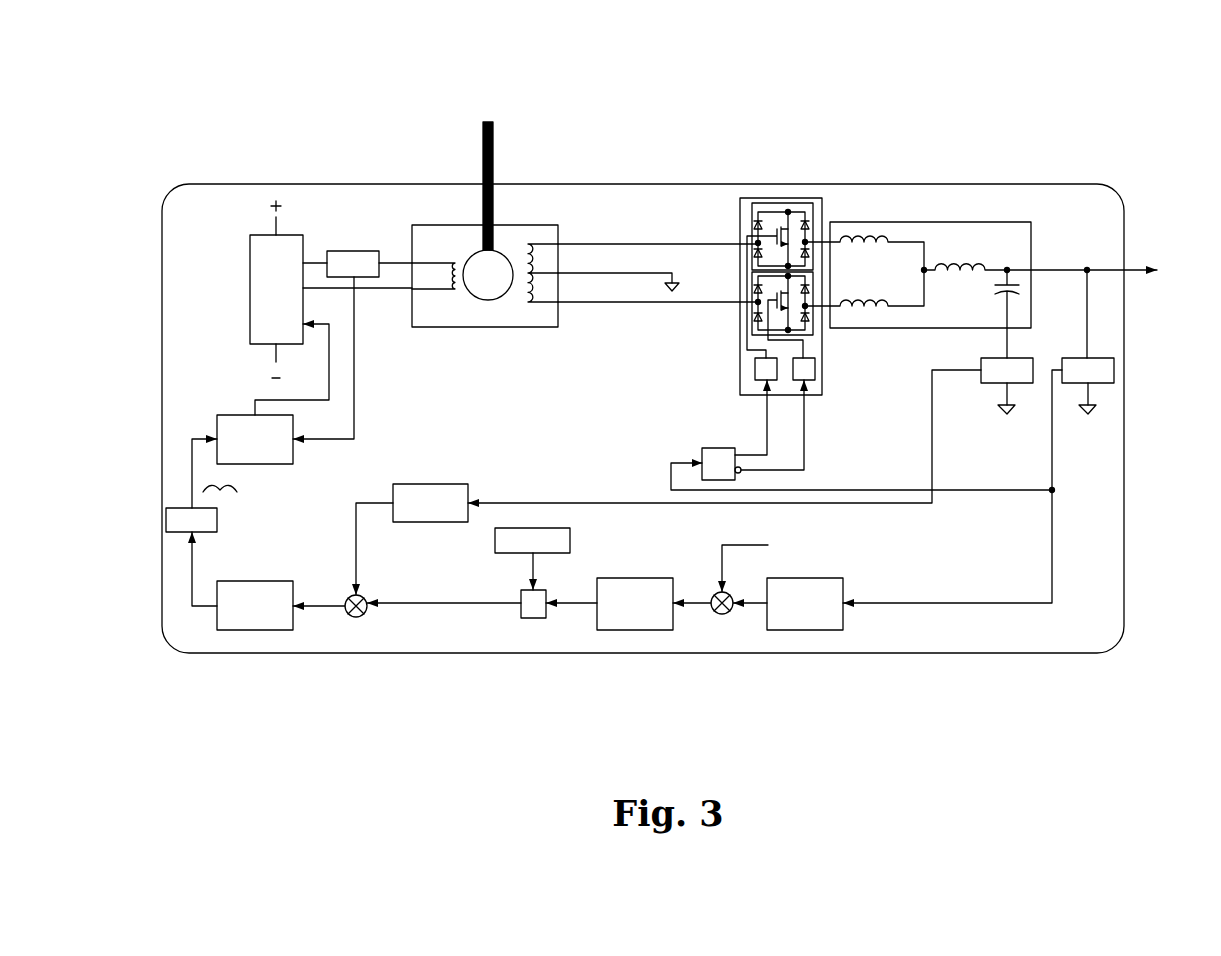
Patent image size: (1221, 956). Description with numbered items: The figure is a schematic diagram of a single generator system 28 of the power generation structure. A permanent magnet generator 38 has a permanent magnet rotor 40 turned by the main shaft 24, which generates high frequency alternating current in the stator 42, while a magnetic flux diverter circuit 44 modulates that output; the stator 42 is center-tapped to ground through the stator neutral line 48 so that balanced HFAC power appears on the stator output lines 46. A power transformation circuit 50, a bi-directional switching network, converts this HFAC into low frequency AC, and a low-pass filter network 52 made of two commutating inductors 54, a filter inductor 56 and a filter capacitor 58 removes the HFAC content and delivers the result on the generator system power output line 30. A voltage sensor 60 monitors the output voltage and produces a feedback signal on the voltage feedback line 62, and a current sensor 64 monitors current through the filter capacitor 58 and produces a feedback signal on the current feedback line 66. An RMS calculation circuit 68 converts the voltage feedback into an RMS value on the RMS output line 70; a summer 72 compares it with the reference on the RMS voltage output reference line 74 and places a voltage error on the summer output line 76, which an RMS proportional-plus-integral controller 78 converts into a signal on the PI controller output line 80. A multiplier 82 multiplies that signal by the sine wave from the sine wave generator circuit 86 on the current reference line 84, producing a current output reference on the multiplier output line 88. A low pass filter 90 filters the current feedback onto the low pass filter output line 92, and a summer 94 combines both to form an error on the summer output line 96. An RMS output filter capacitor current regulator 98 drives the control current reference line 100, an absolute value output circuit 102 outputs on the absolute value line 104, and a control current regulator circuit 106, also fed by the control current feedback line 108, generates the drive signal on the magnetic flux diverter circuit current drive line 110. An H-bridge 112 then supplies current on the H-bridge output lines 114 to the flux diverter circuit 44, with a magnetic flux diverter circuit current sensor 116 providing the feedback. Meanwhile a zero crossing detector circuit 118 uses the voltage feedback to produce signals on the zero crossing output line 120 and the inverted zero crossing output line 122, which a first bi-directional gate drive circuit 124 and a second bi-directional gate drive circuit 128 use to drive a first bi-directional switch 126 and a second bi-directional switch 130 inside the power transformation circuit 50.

The main shaft 24 is at (505, 150).
The generator system 28 is at (1142, 85).
The generator system power output line 30 is at (1132, 275).
The permanent magnet generator 38 is at (477, 327).
The permanent magnet rotor 40 is at (488, 275).
The stator 42 is at (542, 308).
The magnetic flux diverter circuit 44 is at (460, 298).
The stator output lines 46 is at (588, 240).
The stator neutral line 48 is at (633, 273).
The power transformation circuit 50 is at (740, 205).
The low-pass filter network 52 is at (1003, 222).
The commutating inductors 54 is at (850, 237).
The filter inductor 56 is at (960, 262).
The filter capacitor 58 is at (1000, 290).
The voltage sensor 60 is at (1088, 342).
The voltage feedback line 62 is at (1052, 425).
The current sensor 64 is at (1007, 386).
The current feedback line 66 is at (932, 425).
The RMS calculation circuit 68 is at (805, 604).
The RMS output line 70 is at (758, 608).
The summer 72 is at (713, 614).
The RMS voltage output reference line 74 is at (740, 548).
The summer output line 76 is at (704, 598).
The RMS proportional-plus-integral controller 78 is at (635, 604).
The PI controller output line 80 is at (585, 604).
The multiplier 82 is at (530, 618).
The current reference line 84 is at (533, 562).
The sine wave generator circuit 86 is at (532, 540).
The multiplier output line 88 is at (451, 602).
The low pass filter 90 is at (430, 503).
The low pass filter output line 92 is at (357, 537).
The summer 94 is at (367, 617).
The summer output line 96 is at (330, 603).
The RMS output filter capacitor current regulator 98 is at (255, 605).
The control current reference line 100 is at (194, 572).
The absolute value output circuit 102 is at (191, 520).
The absolute value line 104 is at (190, 445).
The control current regulator circuit 106 is at (255, 439).
The control current feedback line 108 is at (346, 443).
The magnetic flux diverter circuit current drive line 110 is at (262, 398).
The H-bridge 112 is at (276, 289).
The H-bridge output lines 114 is at (398, 258).
The magnetic flux diverter circuit current sensor 116 is at (353, 264).
The zero crossing detector circuit 118 is at (702, 462).
The zero crossing output line 120 is at (767, 430).
The inverted zero crossing output line 122 is at (806, 430).
The first bi-directional gate drive circuit 124 is at (755, 368).
The first bi-directional switch 126 is at (752, 232).
The second bi-directional gate drive circuit 128 is at (816, 368).
The second bi-directional switch 130 is at (752, 328).